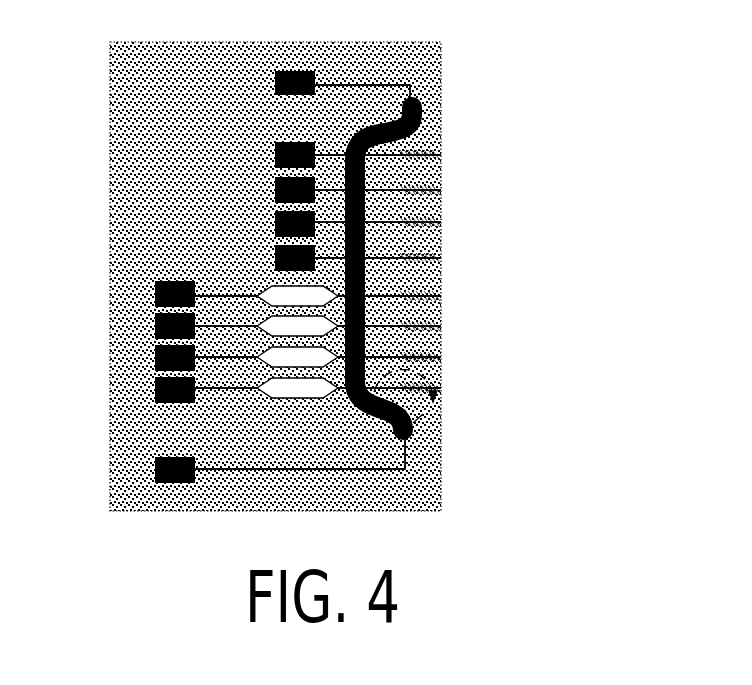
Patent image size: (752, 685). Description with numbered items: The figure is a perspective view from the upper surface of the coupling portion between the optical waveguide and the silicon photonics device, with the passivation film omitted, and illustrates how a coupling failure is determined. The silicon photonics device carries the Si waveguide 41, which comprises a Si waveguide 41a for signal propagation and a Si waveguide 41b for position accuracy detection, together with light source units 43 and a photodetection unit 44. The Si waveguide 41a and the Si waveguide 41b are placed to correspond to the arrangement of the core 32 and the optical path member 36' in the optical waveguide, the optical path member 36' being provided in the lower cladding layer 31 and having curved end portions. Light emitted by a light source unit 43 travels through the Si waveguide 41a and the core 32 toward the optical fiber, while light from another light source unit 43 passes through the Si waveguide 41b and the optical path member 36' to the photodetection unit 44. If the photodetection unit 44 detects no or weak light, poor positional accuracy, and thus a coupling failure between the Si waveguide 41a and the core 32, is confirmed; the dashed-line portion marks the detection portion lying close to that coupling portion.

The lower cladding layer 31 is at (425, 493).
The core 32 is at (425, 228).
The optical path member 36' is at (437, 266).
The Si waveguide 41 is at (318, 277).
The Si waveguide for signal propagation 41a is at (385, 190).
The Si waveguide for position accuracy detection 41b is at (390, 82).
The light source unit 43 is at (167, 456).
The photodetection unit 44 is at (275, 88).